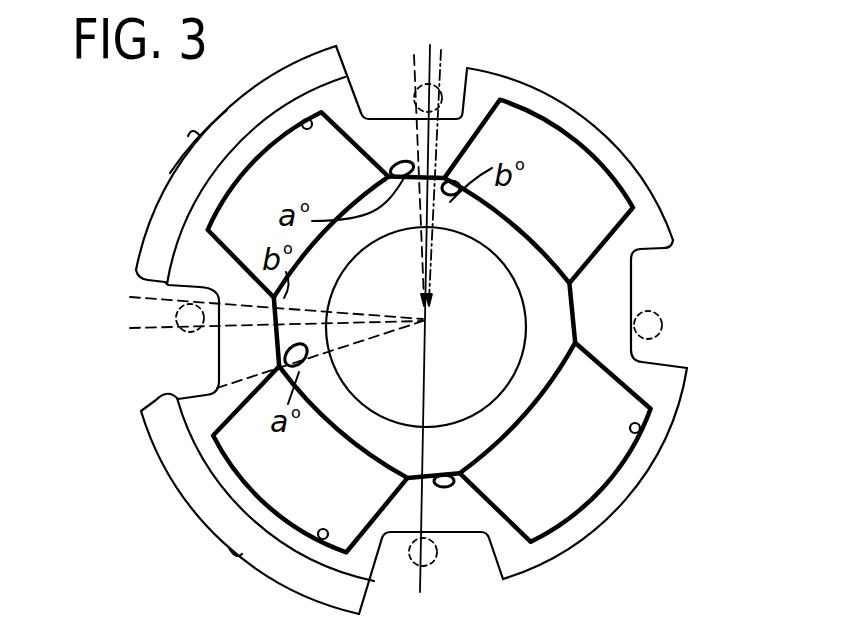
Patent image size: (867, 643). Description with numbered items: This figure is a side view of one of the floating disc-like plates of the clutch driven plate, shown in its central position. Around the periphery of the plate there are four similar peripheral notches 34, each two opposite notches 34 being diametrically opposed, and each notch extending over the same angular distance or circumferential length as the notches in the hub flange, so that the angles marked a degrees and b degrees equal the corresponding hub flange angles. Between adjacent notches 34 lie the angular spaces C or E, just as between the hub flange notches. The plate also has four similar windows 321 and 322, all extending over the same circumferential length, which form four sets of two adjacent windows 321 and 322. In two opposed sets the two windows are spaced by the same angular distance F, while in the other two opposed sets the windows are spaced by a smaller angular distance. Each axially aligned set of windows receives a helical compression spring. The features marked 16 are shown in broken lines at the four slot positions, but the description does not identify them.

The positioning holes 16 is at (437, 86).
The peripheral notches 34 is at (470, 68).
The window 321 is at (325, 528).
The window 322 is at (305, 122).
The angular space C is at (248, 342).
The angular space E is at (195, 140).
The angular distance F is at (386, 181).